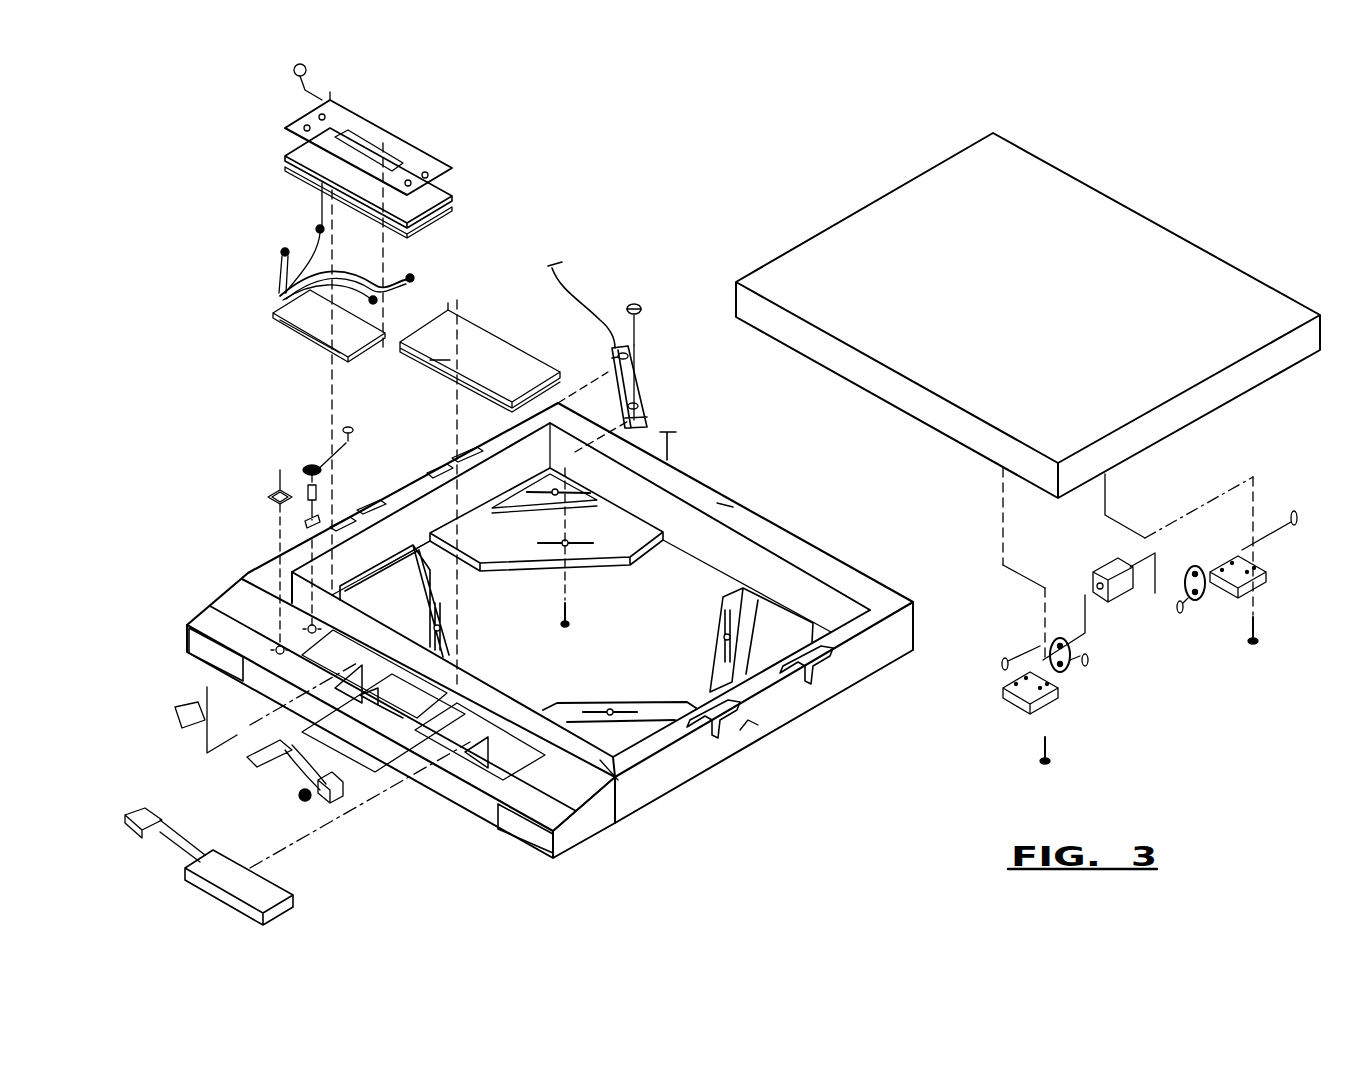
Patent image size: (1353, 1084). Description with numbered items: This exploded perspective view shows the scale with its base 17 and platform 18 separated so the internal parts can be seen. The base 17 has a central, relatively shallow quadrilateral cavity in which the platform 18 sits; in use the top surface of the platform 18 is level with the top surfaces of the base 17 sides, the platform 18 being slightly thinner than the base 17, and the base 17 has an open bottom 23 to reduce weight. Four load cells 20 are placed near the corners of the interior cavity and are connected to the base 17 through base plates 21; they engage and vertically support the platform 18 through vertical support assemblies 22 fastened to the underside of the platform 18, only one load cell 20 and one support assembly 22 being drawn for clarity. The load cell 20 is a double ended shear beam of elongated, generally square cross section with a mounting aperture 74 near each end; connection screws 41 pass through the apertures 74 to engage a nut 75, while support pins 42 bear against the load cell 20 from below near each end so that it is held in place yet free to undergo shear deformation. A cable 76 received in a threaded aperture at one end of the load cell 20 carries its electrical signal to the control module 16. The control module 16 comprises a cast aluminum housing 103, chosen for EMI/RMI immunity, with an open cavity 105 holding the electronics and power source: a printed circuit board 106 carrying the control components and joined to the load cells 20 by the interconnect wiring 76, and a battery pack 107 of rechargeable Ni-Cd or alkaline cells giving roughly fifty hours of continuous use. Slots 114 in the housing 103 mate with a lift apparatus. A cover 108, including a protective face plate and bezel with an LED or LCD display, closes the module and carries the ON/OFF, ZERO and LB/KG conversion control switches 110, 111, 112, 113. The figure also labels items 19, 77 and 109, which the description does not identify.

The control module 16 is at (228, 580).
The base 17 is at (820, 742).
The platform 18 is at (1103, 182).
The retaining tabs 19 is at (376, 500).
The load cell 20 is at (661, 368).
The base plate 21 is at (516, 572).
The vertical support assembly 22 is at (1132, 660).
The open bottom 23 is at (624, 678).
The connection screw 41 is at (580, 608).
The support pin 42 is at (678, 436).
The mounting aperture 74 is at (615, 355).
The nut 75 is at (648, 297).
The cable 76 is at (592, 289).
The slot 77 is at (616, 402).
The housing 103 is at (598, 852).
The open cavity 105 is at (300, 642).
The printed circuit board 106 is at (300, 338).
The battery pack 107 is at (278, 908).
The cover 108 is at (474, 204).
The cover plate 109 is at (468, 320).
The control switch 110 is at (281, 252).
The control switch 111 is at (316, 226).
The control switch 112 is at (414, 274).
The control switch 113 is at (378, 306).
The slot 114 is at (188, 660).